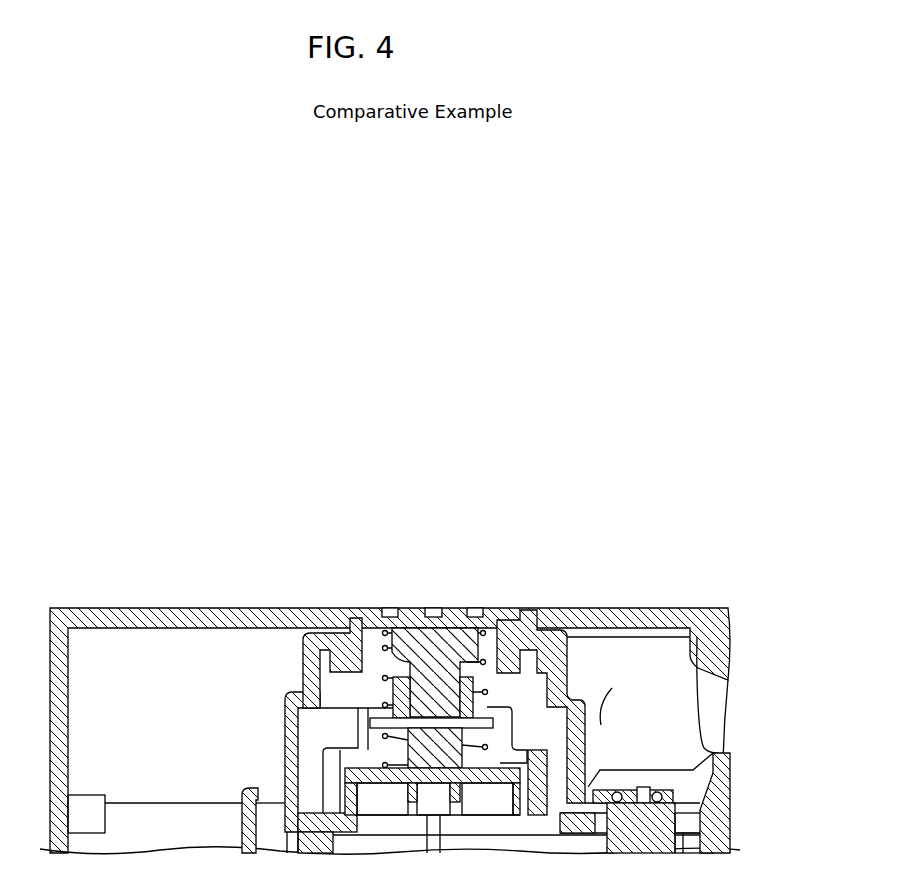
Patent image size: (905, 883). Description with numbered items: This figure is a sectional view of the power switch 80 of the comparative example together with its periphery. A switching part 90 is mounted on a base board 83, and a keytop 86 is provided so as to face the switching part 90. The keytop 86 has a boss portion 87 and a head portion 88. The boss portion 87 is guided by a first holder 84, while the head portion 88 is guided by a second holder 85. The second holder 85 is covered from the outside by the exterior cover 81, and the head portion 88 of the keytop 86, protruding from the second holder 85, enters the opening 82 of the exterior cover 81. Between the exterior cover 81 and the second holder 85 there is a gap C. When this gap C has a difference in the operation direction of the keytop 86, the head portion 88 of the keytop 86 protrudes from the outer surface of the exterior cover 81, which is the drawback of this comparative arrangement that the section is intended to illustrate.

The power switch 80 is at (461, 656).
The exterior cover 81 is at (198, 607).
The opening 82 is at (357, 616).
The base board 83 is at (282, 740).
The first holder 84 is at (380, 683).
The second holder 85 is at (275, 612).
The keytop 86 is at (409, 600).
The boss portion 87 is at (437, 697).
The head portion 88 is at (453, 620).
The switching part 90 is at (345, 722).
The gap C is at (547, 608).